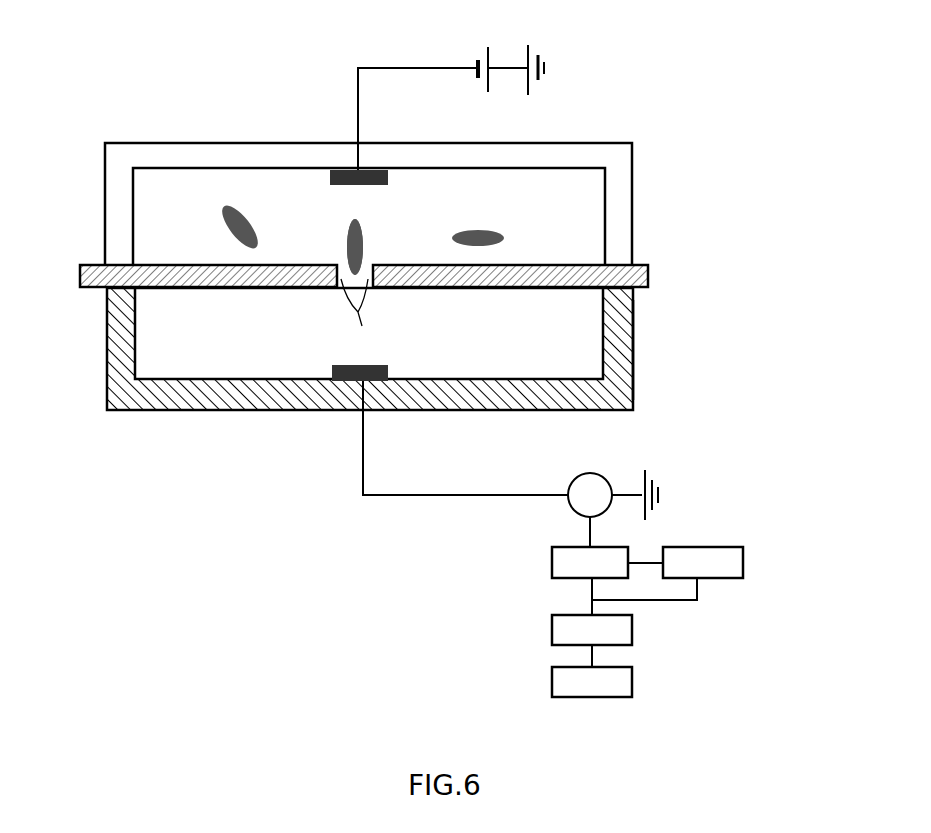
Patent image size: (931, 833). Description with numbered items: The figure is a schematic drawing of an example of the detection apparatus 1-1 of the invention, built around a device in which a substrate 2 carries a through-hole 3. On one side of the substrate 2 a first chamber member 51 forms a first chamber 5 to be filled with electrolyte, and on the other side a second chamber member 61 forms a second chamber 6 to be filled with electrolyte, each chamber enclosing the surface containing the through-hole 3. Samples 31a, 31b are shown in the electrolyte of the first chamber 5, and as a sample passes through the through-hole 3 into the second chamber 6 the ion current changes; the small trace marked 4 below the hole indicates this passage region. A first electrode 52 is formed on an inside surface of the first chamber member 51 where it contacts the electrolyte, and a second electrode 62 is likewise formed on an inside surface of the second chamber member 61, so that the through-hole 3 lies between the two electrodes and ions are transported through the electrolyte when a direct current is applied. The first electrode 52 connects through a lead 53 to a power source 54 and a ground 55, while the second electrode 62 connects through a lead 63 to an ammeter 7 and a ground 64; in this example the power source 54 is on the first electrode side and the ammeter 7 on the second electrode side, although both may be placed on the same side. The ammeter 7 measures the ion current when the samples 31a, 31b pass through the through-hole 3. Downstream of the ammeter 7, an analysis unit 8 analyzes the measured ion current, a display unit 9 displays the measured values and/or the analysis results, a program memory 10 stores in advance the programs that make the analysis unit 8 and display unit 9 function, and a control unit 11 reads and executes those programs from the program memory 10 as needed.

The detection apparatus 1-1 is at (685, 92).
The substrate 2 is at (650, 272).
The through-hole 3 is at (370, 266).
The sample 31a is at (366, 232).
The sample 31b is at (258, 232).
The ion passing through opening 4 is at (356, 313).
The first chamber 5 is at (548, 193).
The first chamber member 51 is at (620, 222).
The first electrode 52 is at (340, 168).
The lead 53 is at (358, 113).
The power source 54 is at (490, 82).
The ground 55 is at (545, 78).
The second chamber 6 is at (555, 362).
The second chamber member 61 is at (634, 381).
The second electrode 62 is at (326, 412).
The lead 63 is at (365, 462).
The ground 64 is at (666, 500).
The ammeter 7 is at (610, 486).
The analysis unit 8 is at (598, 564).
The display unit 9 is at (723, 563).
The program memory 10 is at (622, 686).
The control unit 11 is at (622, 634).